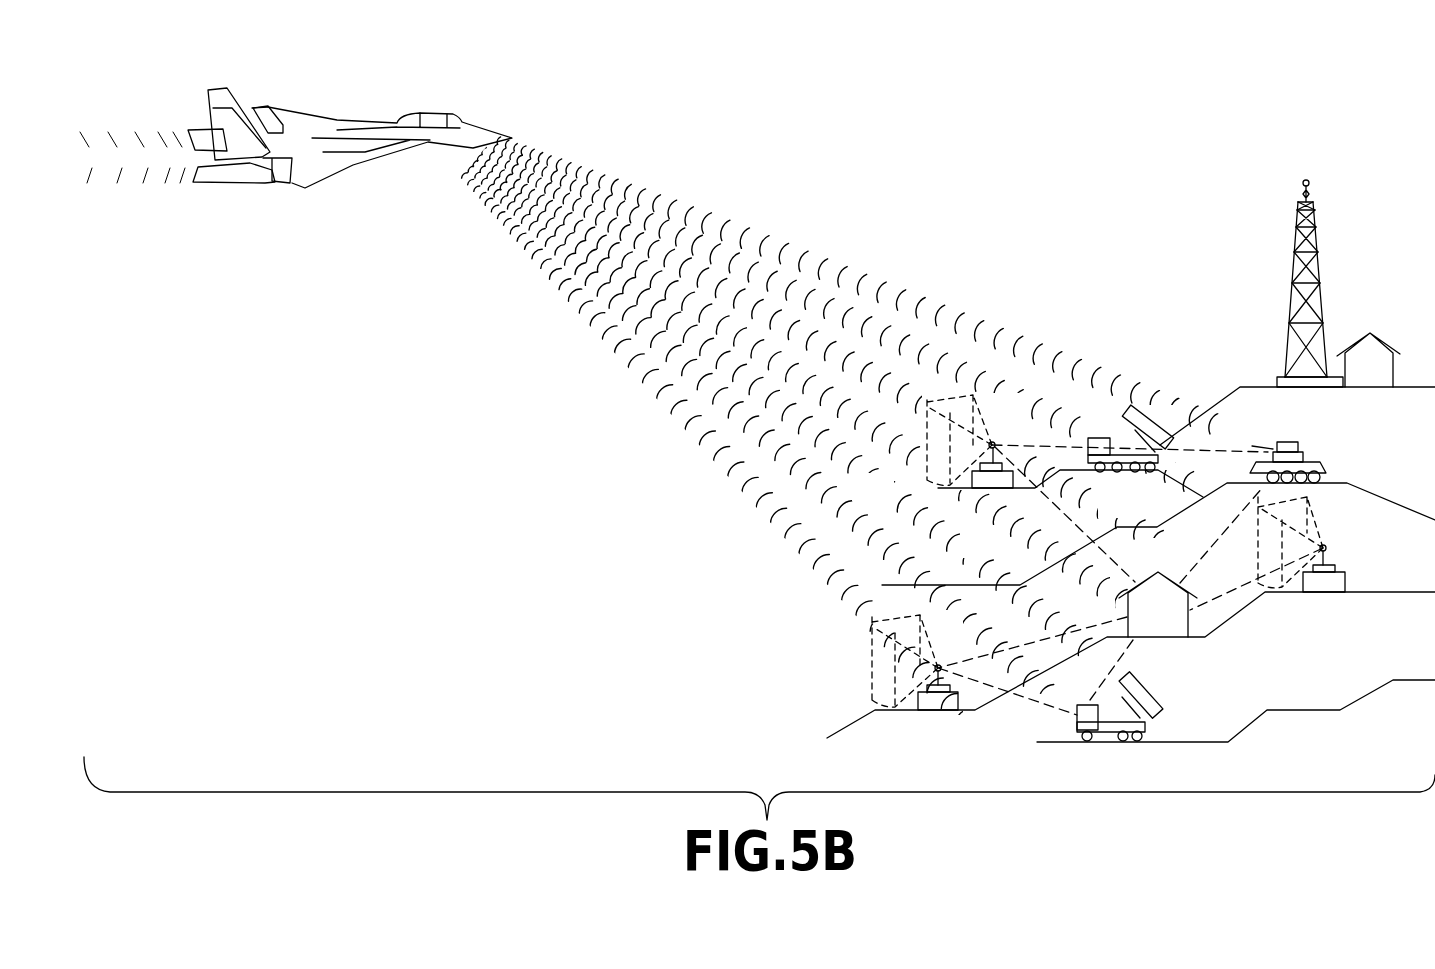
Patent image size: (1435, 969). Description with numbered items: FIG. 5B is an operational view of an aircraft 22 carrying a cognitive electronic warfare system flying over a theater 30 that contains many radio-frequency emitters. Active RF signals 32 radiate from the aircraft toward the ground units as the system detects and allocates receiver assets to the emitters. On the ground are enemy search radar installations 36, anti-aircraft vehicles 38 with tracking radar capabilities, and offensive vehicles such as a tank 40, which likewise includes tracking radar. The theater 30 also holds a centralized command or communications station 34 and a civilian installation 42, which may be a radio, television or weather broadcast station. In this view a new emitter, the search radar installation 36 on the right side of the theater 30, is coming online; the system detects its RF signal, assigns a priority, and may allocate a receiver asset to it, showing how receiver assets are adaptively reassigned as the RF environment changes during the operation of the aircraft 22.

The aircraft 22 is at (337, 95).
The theater 30 is at (1085, 298).
The active RF signals 32 is at (628, 345).
The centralized command or communications station 34 is at (1173, 626).
The search radar installation 36 is at (988, 485).
The anti-aircraft vehicle 38 is at (1113, 470).
The tank 40 is at (1306, 453).
The civilian installation 42 is at (1363, 352).